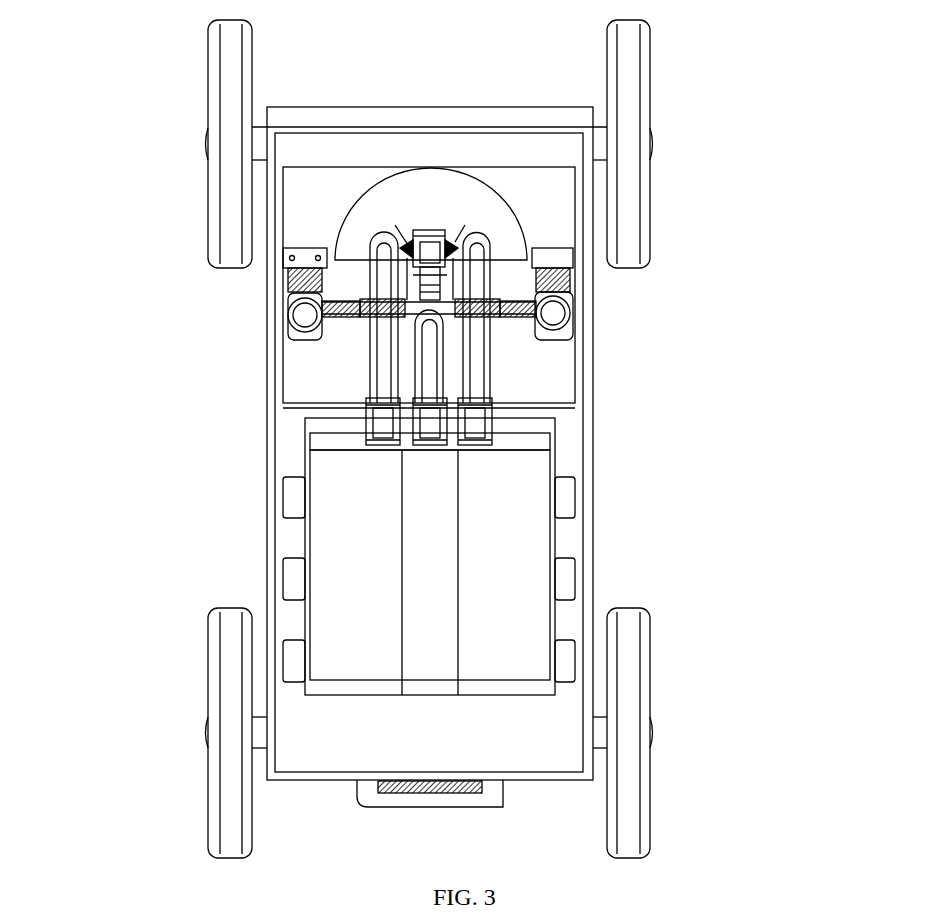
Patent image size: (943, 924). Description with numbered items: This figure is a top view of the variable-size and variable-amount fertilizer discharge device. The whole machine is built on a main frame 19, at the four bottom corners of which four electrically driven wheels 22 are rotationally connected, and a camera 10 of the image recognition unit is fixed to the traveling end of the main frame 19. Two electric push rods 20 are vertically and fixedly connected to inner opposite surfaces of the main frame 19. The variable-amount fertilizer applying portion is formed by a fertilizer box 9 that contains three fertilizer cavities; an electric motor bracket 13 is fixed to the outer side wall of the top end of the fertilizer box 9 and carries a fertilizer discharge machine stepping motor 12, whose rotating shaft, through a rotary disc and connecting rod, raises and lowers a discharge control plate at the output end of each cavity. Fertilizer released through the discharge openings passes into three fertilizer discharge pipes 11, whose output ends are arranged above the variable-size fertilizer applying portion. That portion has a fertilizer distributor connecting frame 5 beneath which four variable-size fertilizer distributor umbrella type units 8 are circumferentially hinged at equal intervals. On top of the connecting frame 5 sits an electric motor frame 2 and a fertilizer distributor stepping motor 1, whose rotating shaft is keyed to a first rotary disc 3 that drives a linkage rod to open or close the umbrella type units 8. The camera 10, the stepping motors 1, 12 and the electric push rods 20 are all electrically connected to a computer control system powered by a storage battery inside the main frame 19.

The fertilizer distributor stepping motor 1 is at (470, 239).
The electric motor frame 2 is at (433, 275).
The first rotary disc 3 is at (545, 299).
The fertilizer distributor connecting frame 5 is at (340, 277).
The variable-size fertilizer distributor umbrella type unit 8 is at (417, 193).
The fertilizer box 9 is at (487, 522).
The camera 10 is at (493, 790).
The fertilizer discharge pipe 11 is at (382, 375).
The fertilizer discharge machine stepping motor 12 is at (432, 416).
The electric motor bracket 13 is at (457, 448).
The main frame 19 is at (297, 458).
The electric push rod 20 is at (303, 315).
The wheel 22 is at (628, 637).